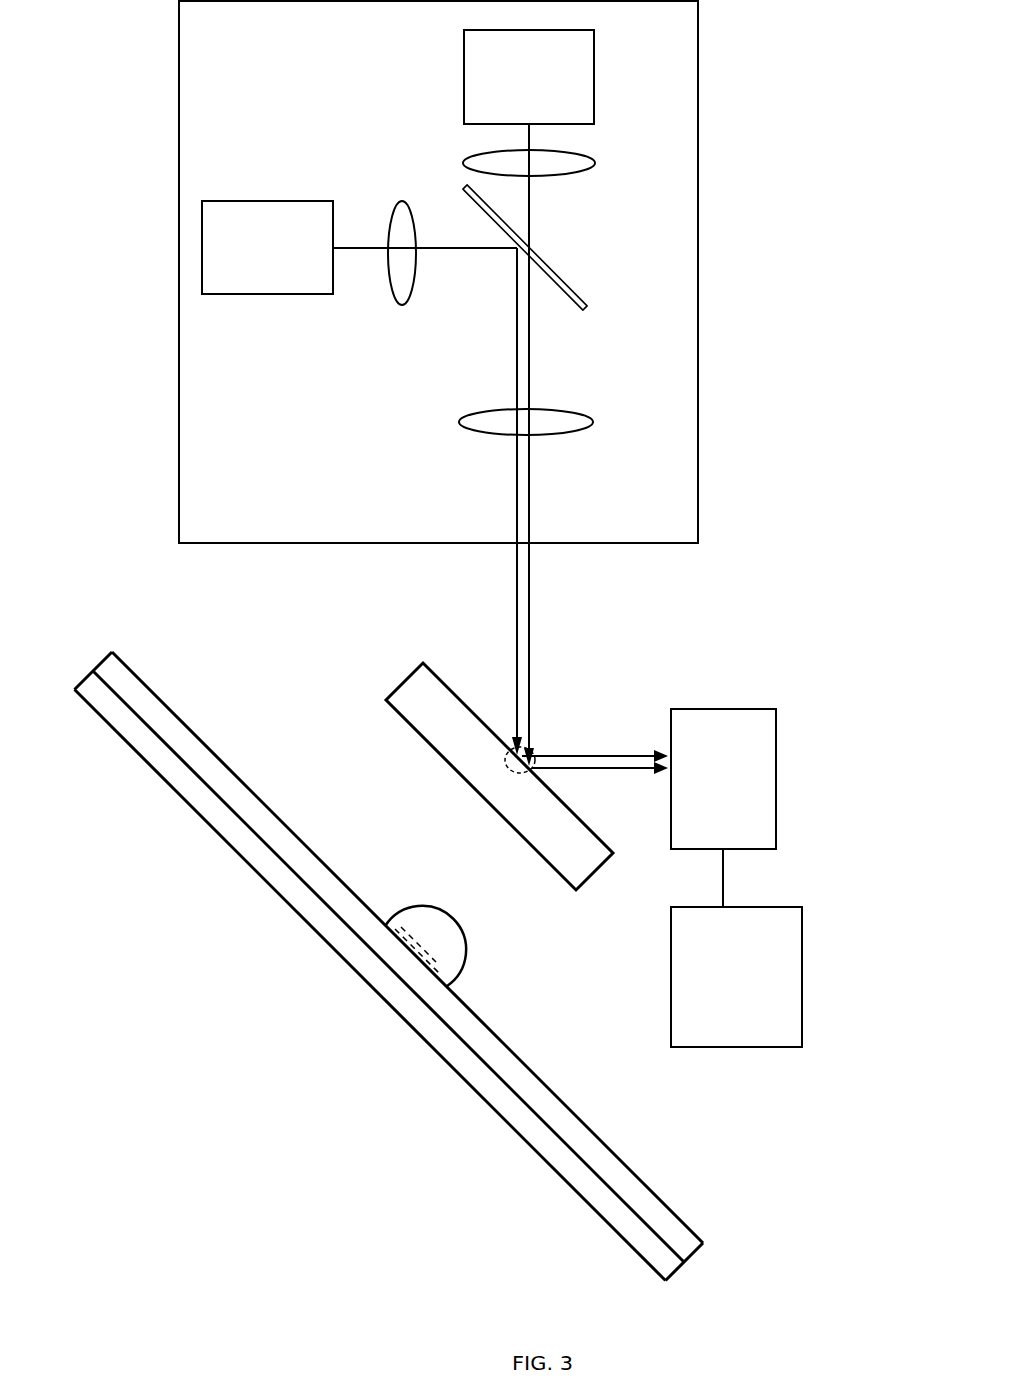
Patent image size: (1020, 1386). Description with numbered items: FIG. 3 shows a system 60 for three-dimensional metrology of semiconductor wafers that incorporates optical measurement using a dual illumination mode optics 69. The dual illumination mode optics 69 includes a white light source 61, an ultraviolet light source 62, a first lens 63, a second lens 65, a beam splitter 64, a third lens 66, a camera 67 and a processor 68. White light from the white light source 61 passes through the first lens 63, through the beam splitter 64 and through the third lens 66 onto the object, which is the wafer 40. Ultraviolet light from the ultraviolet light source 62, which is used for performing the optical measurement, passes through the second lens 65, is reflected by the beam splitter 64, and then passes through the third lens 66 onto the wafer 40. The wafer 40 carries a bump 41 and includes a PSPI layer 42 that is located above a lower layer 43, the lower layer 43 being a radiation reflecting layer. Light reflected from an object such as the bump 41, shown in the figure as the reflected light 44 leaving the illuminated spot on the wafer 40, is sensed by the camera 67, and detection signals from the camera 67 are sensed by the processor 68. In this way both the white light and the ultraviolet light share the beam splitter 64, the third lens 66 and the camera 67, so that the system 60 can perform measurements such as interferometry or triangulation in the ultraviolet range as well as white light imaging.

The wafer 40 is at (396, 688).
The bump 41 is at (415, 946).
The PSPI layer 42 is at (471, 923).
The lower layer 43 is at (460, 940).
The illuminated spot / reflected light 44 is at (447, 987).
The system 60 is at (397, 992).
The white light source 61 is at (579, 121).
The ultraviolet light source 62 is at (320, 290).
The first lens 63 is at (567, 176).
The beam splitter 64 is at (525, 247).
The second lens 65 is at (418, 292).
The third lens 66 is at (565, 441).
The camera 67 is at (752, 833).
The processor 68 is at (769, 1031).
The dual illumination mode optics 69 is at (395, 514).